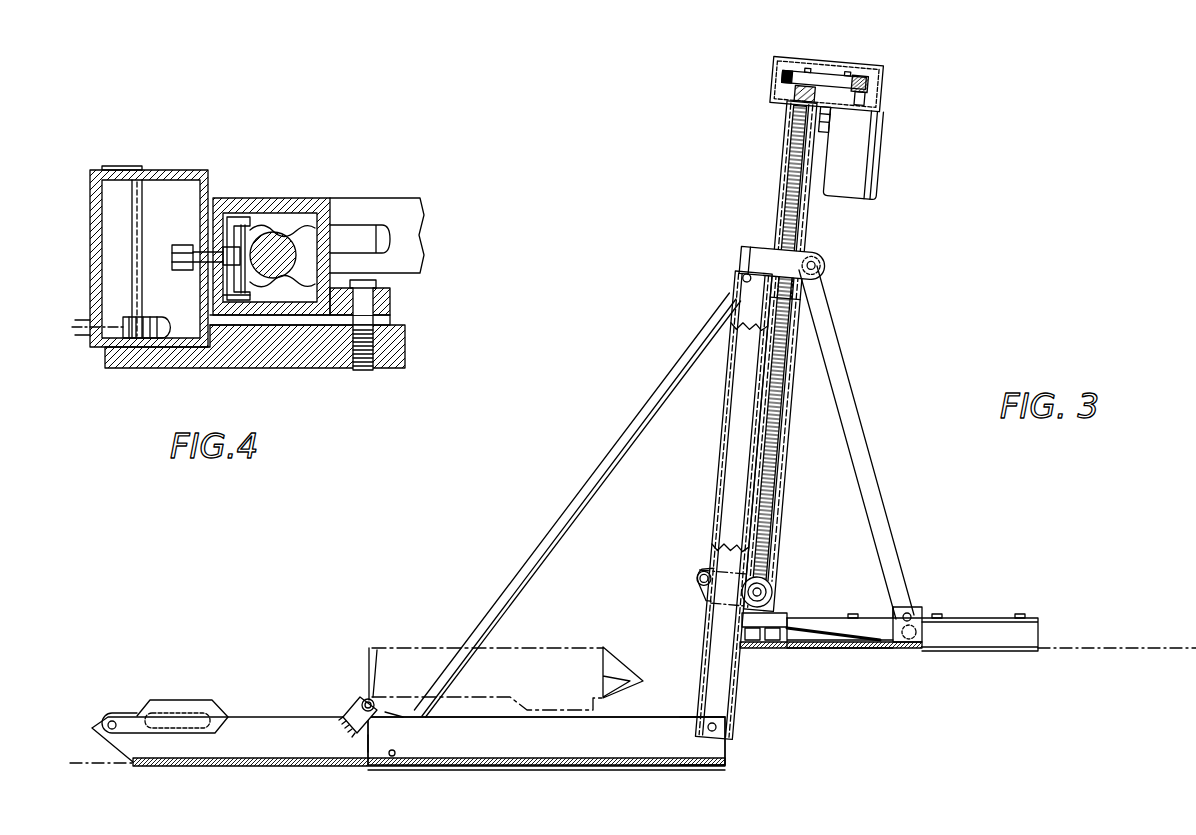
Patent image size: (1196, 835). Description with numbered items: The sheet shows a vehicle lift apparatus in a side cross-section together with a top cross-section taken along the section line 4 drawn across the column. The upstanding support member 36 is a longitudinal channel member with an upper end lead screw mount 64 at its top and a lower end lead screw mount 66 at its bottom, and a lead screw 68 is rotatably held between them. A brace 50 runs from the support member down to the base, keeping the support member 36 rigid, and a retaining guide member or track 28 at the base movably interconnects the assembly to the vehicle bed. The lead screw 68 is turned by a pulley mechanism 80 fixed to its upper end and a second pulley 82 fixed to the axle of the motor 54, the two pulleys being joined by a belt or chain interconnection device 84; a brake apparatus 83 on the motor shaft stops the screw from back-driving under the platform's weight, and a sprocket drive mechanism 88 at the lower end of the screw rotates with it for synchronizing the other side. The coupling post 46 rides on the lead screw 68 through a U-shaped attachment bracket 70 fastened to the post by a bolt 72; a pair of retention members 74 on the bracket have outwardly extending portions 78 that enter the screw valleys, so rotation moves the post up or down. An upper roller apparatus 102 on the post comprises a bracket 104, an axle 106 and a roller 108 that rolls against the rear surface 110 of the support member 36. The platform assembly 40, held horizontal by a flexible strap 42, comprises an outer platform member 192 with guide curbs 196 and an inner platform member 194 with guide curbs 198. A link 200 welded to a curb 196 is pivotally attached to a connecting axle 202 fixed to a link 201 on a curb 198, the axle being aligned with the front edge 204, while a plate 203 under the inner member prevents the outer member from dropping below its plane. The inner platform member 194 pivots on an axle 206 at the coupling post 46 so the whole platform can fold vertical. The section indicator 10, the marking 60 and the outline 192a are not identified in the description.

In FIG. 3, the retaining guide member or track 28 is at (953, 618).
In FIG. 4, the upstanding support member 36 is at (278, 200).
In FIG. 3, the upstanding support member 36 is at (782, 163).
In FIG. 3, the platform assembly 40 is at (352, 679).
In FIG. 3, the flexible strap or cable 42 is at (608, 465).
In FIG. 4, the coupling post 46 is at (162, 170).
In FIG. 3, the coupling post 46 is at (735, 692).
In FIG. 3, the brace 50 is at (872, 457).
In FIG. 3, the motor 54 is at (872, 180).
In FIG. 3, the column socket 60 is at (727, 762).
In FIG. 3, the upper end lead screw mount 64 is at (777, 98).
In FIG. 3, the lower end lead screw mount 66 is at (785, 618).
In FIG. 4, the lead screw 68 is at (280, 267).
In FIG. 3, the lead screw 68 is at (777, 328).
In FIG. 4, the attachment bracket 70 is at (223, 295).
In FIG. 4, the bolt 72 is at (223, 237).
In FIG. 4, the retention member 74 is at (300, 277).
In FIG. 4, the outwardly extending portion 78 is at (240, 260).
In FIG. 3, the pulley mechanism 80 is at (788, 72).
In FIG. 3, the second pulley 82 is at (878, 78).
In FIG. 3, the brake apparatus 83 is at (878, 97).
In FIG. 3, the interconnection device 84 is at (843, 82).
In FIG. 3, the drive mechanism 88 is at (763, 640).
In FIG. 4, the upper roller apparatus 102 is at (422, 319).
In FIG. 3, the upper roller apparatus 102 is at (818, 253).
In FIG. 4, the bracket 104 is at (141, 367).
In FIG. 4, the axle 106 is at (367, 338).
In FIG. 4, the roller 108 is at (390, 295).
In FIG. 4, the rear surface 110 is at (332, 262).
In FIG. 3, the rear surface 110 is at (803, 297).
In FIG. 3, the outer platform member 192 is at (220, 730).
In FIG. 3, the stowed plate 192a is at (583, 647).
In FIG. 3, the inner platform member 194 is at (623, 758).
In FIG. 3, the guide curb 196 is at (277, 723).
In FIG. 3, the guide curb 198 is at (647, 717).
In FIG. 3, the link 200 is at (353, 710).
In FIG. 3, the link 201 is at (385, 712).
In FIG. 3, the connecting axle 202 is at (372, 650).
In FIG. 3, the plate 203 is at (382, 767).
In FIG. 3, the front edge 204 is at (368, 743).
In FIG. 3, the axle 206 is at (725, 730).
In FIG. 3, the section line 10- 10 is at (835, 58).
In FIG. 3, the section line 4- 4 is at (735, 257).